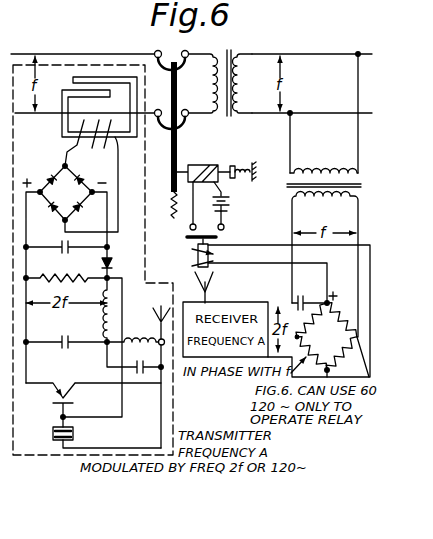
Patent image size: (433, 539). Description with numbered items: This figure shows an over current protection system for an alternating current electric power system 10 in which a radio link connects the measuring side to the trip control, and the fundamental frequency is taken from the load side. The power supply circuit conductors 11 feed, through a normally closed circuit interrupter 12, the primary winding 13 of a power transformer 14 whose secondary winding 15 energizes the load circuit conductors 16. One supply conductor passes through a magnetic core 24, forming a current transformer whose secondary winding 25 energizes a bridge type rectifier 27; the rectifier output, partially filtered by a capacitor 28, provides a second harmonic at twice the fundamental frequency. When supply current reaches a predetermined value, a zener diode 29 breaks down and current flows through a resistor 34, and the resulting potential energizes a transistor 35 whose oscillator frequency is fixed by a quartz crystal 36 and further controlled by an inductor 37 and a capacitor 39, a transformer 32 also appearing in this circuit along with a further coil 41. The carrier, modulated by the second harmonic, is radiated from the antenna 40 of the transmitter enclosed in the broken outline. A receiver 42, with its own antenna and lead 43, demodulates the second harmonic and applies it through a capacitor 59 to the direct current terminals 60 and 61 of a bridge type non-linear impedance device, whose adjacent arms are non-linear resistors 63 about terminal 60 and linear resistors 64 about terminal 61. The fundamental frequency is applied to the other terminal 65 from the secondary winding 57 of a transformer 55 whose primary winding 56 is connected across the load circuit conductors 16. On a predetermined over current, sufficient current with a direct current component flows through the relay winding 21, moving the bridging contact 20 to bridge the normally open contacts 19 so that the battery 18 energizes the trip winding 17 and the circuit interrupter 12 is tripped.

The alternating current electric power system 10 is at (103, 40).
The power supply circuit conductors 11 is at (29, 54).
The circuit interrupter 12 is at (192, 125).
The primary winding 13 is at (202, 83).
The power transformer 14 is at (233, 49).
The secondary winding 15 is at (248, 83).
The load circuit conductors 16 is at (330, 50).
The trip winding 17 is at (213, 166).
The battery 18 is at (230, 206).
The normally open contacts 19 is at (226, 219).
The bridging contact 20 is at (218, 237).
The relay winding 21 is at (212, 258).
The magnetic core 24 is at (118, 82).
The secondary winding 25 is at (91, 176).
The bridge type rectifier 27 is at (44, 168).
The capacitor 28 is at (60, 243).
The zener diode 29 is at (111, 264).
The transformer 32 is at (139, 374).
The resistor 34 is at (55, 275).
The transistor 35 is at (78, 397).
The quartz crystal 36 is at (84, 435).
The inductor 37 is at (140, 338).
The capacitor 39 is at (64, 336).
The antenna 40 is at (161, 306).
The coil 41 is at (112, 297).
The receiver 42 is at (242, 302).
The antenna lead 43 is at (211, 292).
The transformer 55 is at (288, 189).
The primary winding 56 is at (312, 170).
The secondary winding 57 is at (325, 265).
The capacitor 59 is at (302, 295).
The direct current terminal 60 is at (331, 307).
The direct current terminal 61 is at (331, 371).
The non-linear resistors 63 is at (341, 331).
The linear resistors 64 is at (316, 353).
The terminal 65 is at (296, 334).